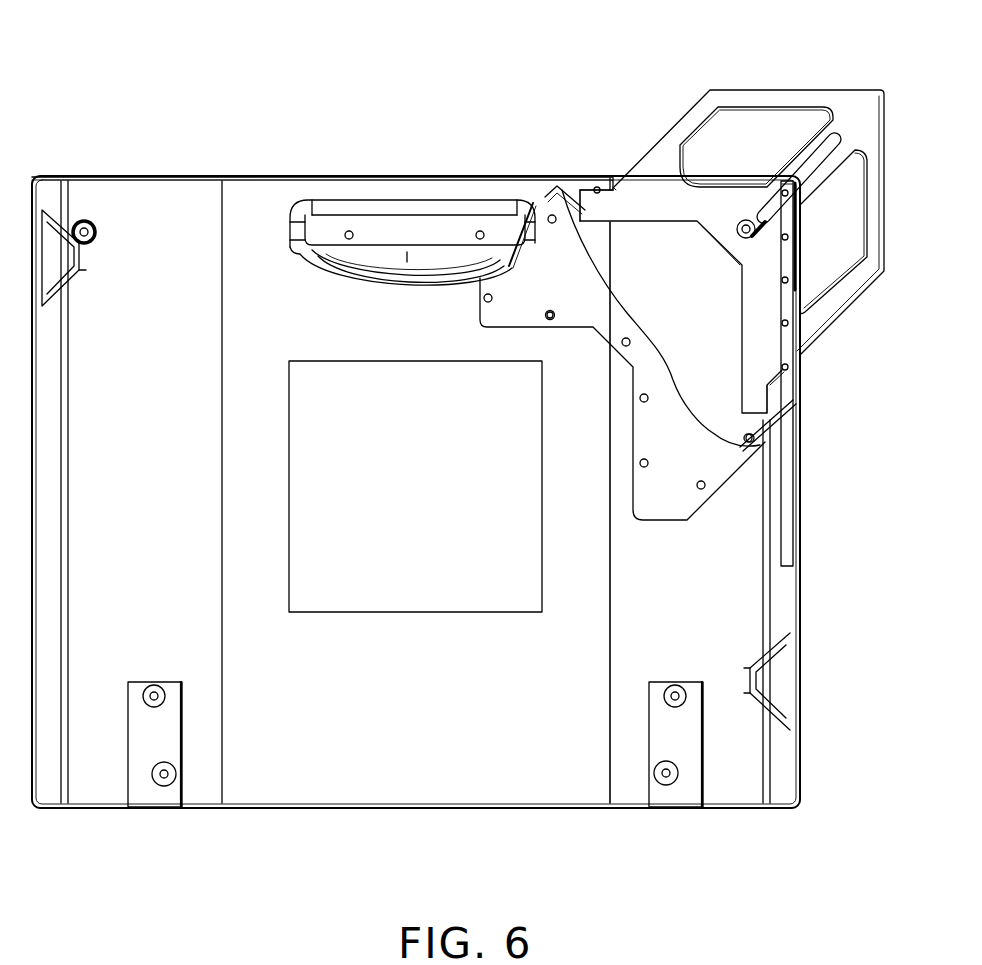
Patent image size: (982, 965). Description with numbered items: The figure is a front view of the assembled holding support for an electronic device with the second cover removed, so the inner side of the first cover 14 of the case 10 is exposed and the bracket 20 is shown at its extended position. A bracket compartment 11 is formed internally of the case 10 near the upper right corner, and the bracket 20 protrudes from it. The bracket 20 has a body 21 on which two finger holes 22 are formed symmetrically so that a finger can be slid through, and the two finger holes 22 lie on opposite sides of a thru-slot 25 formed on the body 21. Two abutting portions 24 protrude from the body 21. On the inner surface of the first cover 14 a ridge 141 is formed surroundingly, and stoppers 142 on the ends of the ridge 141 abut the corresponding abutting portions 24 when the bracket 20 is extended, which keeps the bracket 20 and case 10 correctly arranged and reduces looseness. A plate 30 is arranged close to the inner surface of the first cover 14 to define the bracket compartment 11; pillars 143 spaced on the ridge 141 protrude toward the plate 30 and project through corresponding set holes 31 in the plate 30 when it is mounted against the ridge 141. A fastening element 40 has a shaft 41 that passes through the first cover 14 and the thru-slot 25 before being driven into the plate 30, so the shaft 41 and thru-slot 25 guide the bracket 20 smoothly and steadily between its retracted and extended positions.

The case 10 is at (416, 176).
The first cover 14 is at (424, 119).
The bracket compartment 11 is at (697, 293).
The ridge 141 is at (772, 440).
The stopper 142 is at (585, 188).
The pillar 143 is at (554, 318).
The bracket 20 is at (853, 103).
The body 21 is at (768, 352).
The finger hole 22 is at (745, 104).
The abutting portion 24 is at (600, 208).
The thru-slot 25 is at (807, 150).
The plate 30 is at (723, 467).
The set hole 31 is at (549, 317).
The fastening element 40 is at (661, 62).
The shaft 41 is at (740, 224).